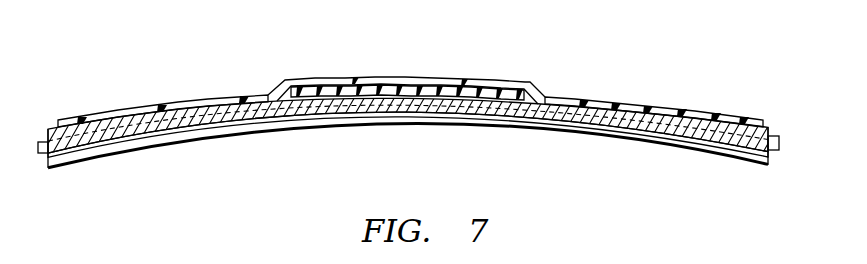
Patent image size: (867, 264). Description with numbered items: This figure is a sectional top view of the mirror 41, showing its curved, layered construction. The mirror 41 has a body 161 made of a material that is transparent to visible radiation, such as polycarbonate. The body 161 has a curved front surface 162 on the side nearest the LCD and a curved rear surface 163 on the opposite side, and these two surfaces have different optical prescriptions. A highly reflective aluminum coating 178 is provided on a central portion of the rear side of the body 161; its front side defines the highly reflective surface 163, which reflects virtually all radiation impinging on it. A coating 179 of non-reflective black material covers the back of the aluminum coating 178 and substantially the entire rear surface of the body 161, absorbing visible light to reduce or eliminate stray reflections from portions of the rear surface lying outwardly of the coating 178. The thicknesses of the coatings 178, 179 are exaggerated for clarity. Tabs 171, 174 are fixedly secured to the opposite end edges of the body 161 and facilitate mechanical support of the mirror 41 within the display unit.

The mirror 41 is at (763, 121).
The body 161 is at (450, 113).
The curved front surface 162 is at (174, 132).
The curved rear surface 163 is at (488, 98).
The tab 171 is at (43, 154).
The tab 174 is at (773, 150).
The highly reflective aluminum coating 178 is at (347, 92).
The coating of non-reflective material 179 is at (183, 104).